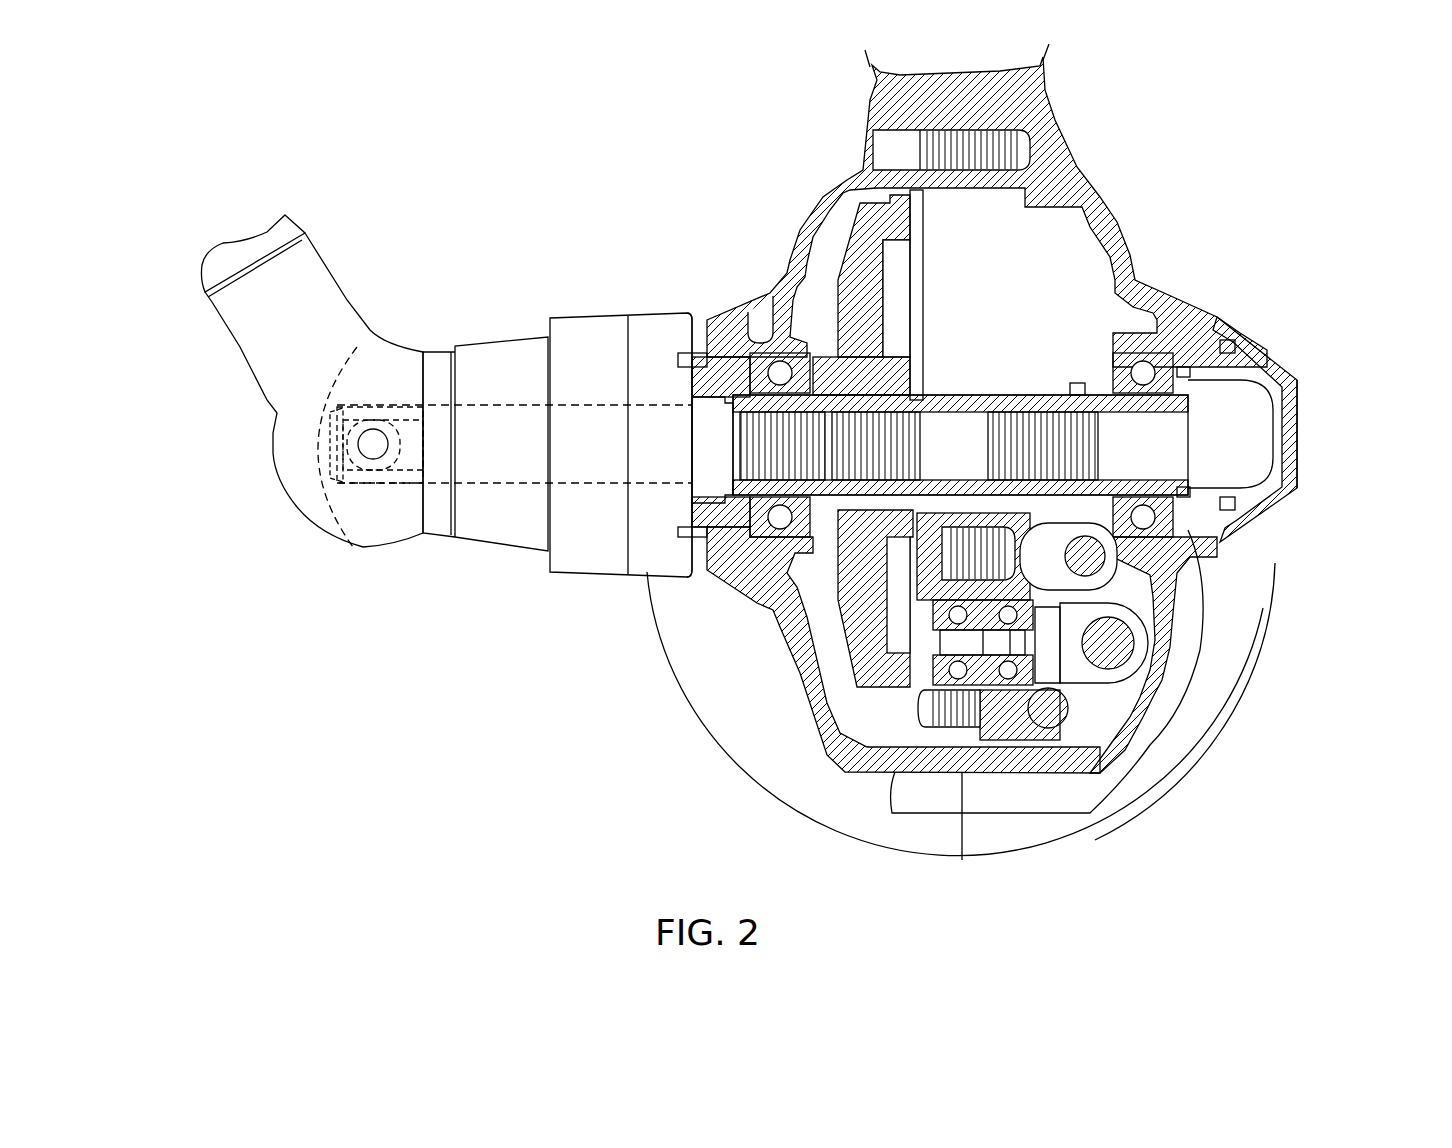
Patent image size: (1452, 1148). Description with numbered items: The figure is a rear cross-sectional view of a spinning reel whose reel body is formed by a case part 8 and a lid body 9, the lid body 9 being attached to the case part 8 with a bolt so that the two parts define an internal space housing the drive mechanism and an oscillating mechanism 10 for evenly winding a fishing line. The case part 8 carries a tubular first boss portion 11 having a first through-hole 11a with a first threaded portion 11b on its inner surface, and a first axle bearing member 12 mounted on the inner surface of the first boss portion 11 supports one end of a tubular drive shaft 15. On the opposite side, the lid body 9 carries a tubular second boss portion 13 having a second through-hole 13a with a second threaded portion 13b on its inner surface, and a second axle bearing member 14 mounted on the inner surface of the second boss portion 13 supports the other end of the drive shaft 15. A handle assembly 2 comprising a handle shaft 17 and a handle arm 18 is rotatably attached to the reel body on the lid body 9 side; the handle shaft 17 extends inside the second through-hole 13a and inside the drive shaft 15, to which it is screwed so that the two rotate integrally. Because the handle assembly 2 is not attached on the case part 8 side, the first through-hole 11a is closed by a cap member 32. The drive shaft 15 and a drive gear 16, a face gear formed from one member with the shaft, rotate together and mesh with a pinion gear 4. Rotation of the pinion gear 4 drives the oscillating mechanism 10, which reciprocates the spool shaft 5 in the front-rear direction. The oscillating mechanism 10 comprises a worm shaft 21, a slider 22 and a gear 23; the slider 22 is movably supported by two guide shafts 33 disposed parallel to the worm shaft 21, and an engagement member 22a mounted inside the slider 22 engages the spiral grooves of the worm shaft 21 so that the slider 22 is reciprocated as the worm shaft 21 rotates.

The handle assembly 2 is at (243, 217).
The handle arm 18 is at (308, 262).
The handle shaft 17 is at (526, 405).
The second boss portion 13 is at (773, 337).
The second through-hole 13a is at (692, 527).
The second threaded portion 13b is at (690, 407).
The second axle bearing member 14 is at (707, 318).
The lid body 9 is at (792, 225).
The case part 8 is at (1127, 220).
The drive gear 16 is at (917, 307).
The drive shaft 15 is at (1010, 393).
The first boss portion 11 is at (1170, 293).
The first through-hole 11a is at (1300, 403).
The first threaded portion 11b is at (1300, 487).
The first axle bearing member 12 is at (1220, 320).
The cap member 32 is at (1293, 370).
The oscillating mechanism 10 is at (1160, 757).
The spool shaft 5 is at (855, 675).
The pinion gear 4 is at (860, 610).
The slider 22 is at (933, 745).
The engagement member 22a is at (1020, 700).
The worm shaft 21 is at (1120, 702).
The gear 23 is at (1132, 662).
The guide shafts 33 is at (1105, 552).